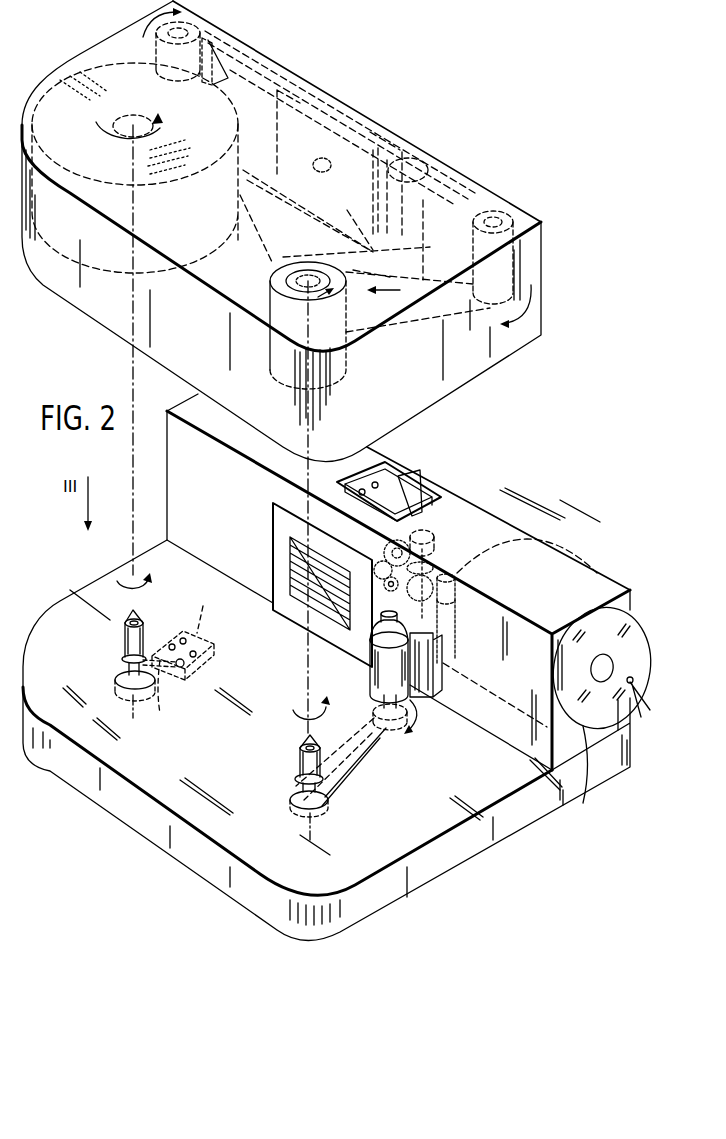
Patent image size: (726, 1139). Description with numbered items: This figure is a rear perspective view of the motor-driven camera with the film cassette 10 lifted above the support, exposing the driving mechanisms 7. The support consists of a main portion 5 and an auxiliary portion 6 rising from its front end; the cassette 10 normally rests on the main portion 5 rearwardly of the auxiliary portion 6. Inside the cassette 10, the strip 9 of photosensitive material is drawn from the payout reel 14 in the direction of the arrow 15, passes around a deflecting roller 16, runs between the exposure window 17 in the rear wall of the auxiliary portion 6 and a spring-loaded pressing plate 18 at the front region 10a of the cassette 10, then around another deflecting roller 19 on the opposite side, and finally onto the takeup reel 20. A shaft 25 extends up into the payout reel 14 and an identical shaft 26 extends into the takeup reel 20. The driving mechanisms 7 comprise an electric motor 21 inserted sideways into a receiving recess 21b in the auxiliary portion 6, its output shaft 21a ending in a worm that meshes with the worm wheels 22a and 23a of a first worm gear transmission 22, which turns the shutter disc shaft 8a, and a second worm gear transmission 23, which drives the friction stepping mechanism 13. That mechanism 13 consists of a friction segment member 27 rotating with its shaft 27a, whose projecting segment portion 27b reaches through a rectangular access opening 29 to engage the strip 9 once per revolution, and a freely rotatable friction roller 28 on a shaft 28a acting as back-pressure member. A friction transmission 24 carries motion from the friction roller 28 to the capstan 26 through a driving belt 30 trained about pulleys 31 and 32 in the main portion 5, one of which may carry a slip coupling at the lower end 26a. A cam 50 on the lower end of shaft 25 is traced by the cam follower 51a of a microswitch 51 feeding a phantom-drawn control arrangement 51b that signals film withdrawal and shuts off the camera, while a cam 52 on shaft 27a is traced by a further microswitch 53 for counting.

The main portion 5 is at (452, 866).
The auxiliary portion 6 is at (554, 539).
The driving mechanisms 7 is at (473, 702).
The shaft 8a is at (386, 590).
The strip 9 is at (330, 257).
The cassette 10 is at (75, 50).
The front region 10a is at (388, 128).
The friction stepping mechanism 13 is at (362, 657).
The payout reel 14 is at (135, 116).
The arrow 15 is at (167, 125).
The deflecting roller 16 is at (163, 38).
The exposure window 17 is at (287, 560).
The pressing plate 18 is at (330, 112).
The deflecting roller 19 is at (210, 32).
The takeup reel 20 is at (270, 279).
The electric motor 21 is at (573, 700).
The output shaft 21a is at (460, 568).
The receiving recess 21b is at (596, 780).
The first worm gear transmission 22 is at (370, 545).
The worm wheel 22a is at (376, 574).
The second worm gear transmission 23 is at (449, 537).
The worm wheel 23a is at (437, 597).
The friction transmission 24 is at (375, 761).
The shaft 25 is at (147, 630).
The shaft 26 is at (298, 760).
The lower end 26a is at (291, 797).
The friction segment member 27 is at (433, 673).
The rotary shaft 27a is at (443, 616).
The segment portion 27b is at (495, 695).
The friction roller 28 is at (370, 690).
The rotary shaft 28a is at (376, 706).
The access opening 29 is at (424, 723).
The driving belt 30 is at (343, 768).
The pulley 31 is at (386, 729).
The pulley 32 is at (308, 836).
The cam 50 is at (135, 702).
The microswitch 51 is at (190, 673).
The cam follower 51a is at (169, 700).
The control arrangement 51b is at (214, 609).
The cam 52 is at (428, 525).
The microswitch 53 is at (390, 498).